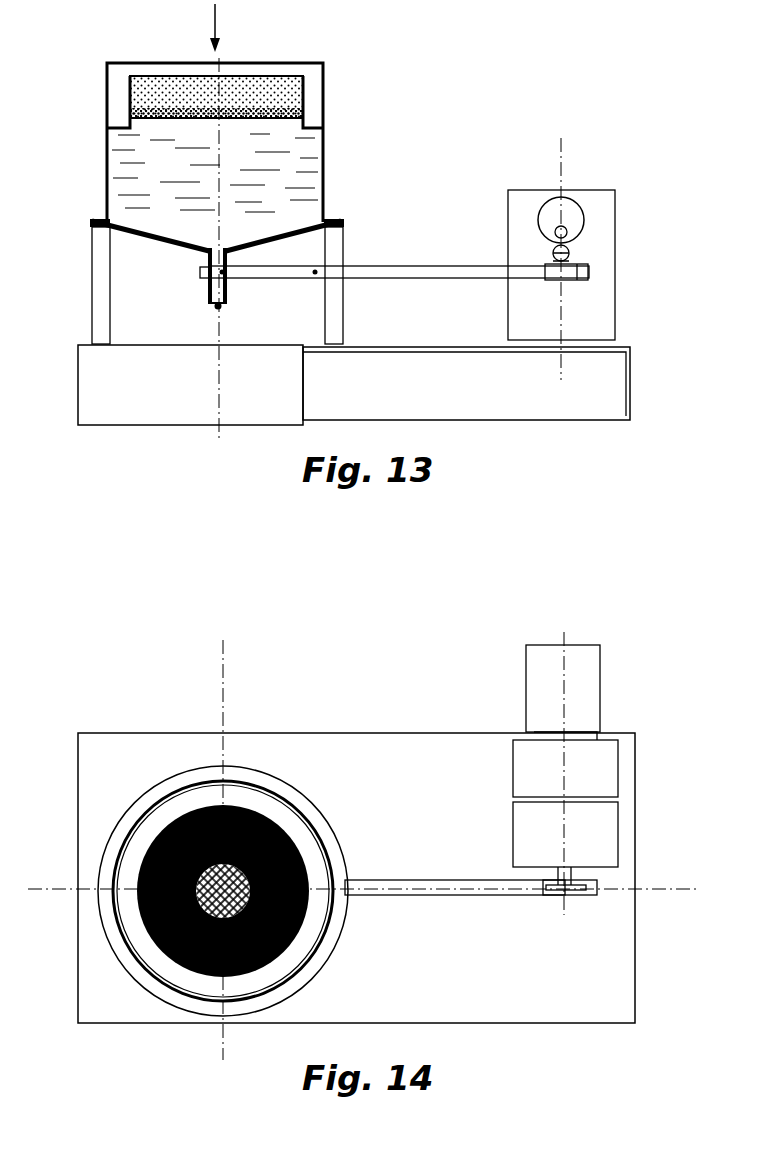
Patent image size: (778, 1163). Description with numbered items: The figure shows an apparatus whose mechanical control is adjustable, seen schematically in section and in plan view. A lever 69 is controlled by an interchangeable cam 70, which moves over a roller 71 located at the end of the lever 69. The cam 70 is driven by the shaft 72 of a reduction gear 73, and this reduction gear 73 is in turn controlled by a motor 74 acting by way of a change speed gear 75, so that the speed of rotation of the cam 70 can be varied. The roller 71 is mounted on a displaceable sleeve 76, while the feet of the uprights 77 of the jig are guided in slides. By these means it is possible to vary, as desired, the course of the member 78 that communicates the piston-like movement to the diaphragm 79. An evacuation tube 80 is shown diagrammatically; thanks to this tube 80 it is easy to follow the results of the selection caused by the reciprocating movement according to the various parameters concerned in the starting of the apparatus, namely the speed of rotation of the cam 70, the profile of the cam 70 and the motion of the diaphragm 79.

In FIG. 13, the lever 69 is at (422, 276).
In FIG. 14, the lever 69 is at (418, 880).
In FIG. 13, the interchangeable cam 70 is at (548, 212).
In FIG. 14, the interchangeable cam 70 is at (553, 893).
In FIG. 13, the roller 71 is at (567, 252).
In FIG. 13, the shaft 72 is at (555, 232).
In FIG. 14, the shaft 72 is at (560, 878).
In FIG. 14, the reduction gear 73 is at (527, 820).
In FIG. 14, the motor 74 is at (595, 690).
In FIG. 14, the change speed gear 75 is at (607, 782).
In FIG. 13, the displaceable sleeve 76 is at (556, 279).
In FIG. 13, the uprights 77 is at (96, 303).
In FIG. 13, the member 78 is at (165, 243).
In FIG. 13, the diaphragm 79 is at (127, 232).
In FIG. 13, the evacuation tube 80 is at (210, 290).